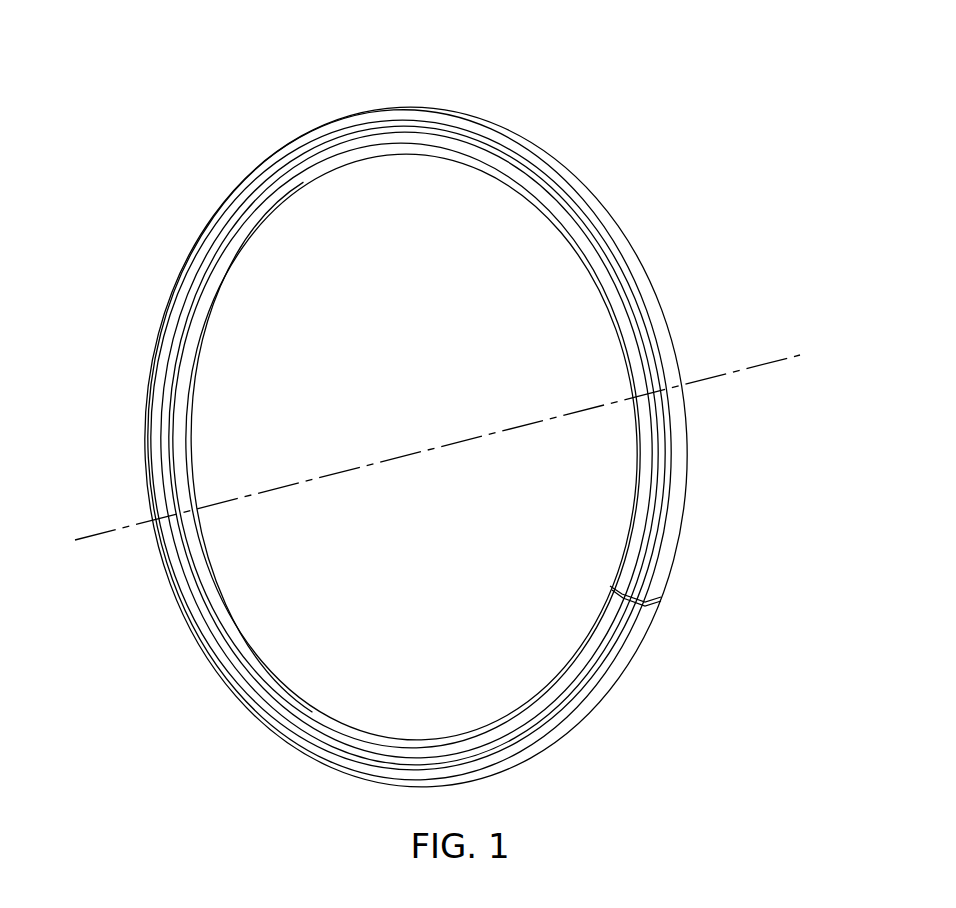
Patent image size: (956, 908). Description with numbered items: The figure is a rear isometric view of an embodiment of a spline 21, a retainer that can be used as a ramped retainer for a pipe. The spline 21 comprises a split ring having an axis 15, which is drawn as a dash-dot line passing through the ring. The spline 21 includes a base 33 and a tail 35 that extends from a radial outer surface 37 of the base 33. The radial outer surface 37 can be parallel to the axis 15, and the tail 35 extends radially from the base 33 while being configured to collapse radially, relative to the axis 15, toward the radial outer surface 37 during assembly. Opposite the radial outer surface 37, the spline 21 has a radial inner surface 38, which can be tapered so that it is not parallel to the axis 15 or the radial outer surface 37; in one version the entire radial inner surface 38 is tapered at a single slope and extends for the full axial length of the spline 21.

The axis 15 is at (738, 372).
The spline 21 is at (430, 422).
The base 33 is at (394, 152).
The tail 35 is at (401, 106).
The radial outer surface 37 is at (443, 126).
The radial inner surface 38 is at (192, 416).